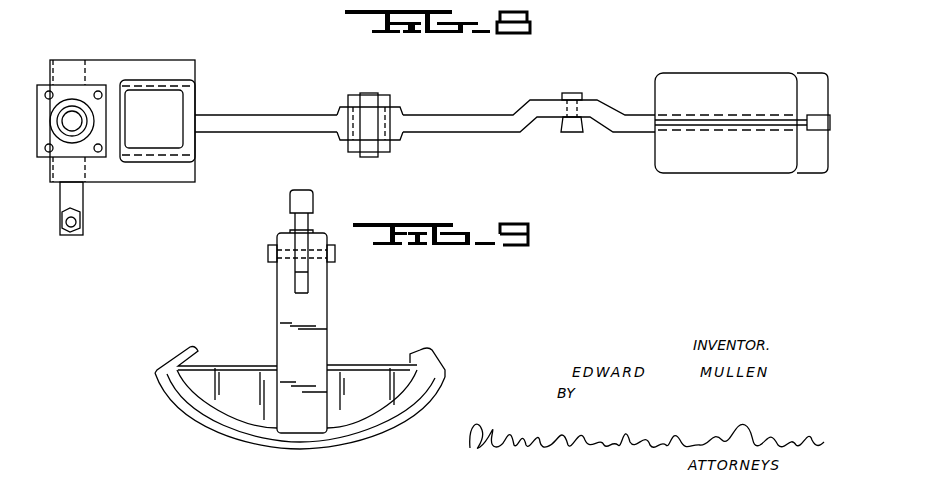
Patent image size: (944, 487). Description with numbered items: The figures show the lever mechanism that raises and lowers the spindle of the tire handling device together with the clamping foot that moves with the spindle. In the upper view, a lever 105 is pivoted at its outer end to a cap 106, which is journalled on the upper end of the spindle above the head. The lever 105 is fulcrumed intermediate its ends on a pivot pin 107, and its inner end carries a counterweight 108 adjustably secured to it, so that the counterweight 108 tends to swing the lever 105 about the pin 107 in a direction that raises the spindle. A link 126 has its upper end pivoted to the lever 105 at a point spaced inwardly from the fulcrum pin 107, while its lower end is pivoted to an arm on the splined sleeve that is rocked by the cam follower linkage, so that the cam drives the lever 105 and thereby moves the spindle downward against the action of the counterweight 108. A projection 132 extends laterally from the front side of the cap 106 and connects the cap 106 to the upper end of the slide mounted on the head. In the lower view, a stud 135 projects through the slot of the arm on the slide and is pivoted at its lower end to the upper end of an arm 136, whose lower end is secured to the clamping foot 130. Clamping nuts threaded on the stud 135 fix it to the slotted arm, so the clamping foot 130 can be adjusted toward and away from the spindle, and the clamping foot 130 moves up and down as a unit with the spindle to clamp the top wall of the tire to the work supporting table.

In FIG. 8, the lever 105 is at (290, 118).
In FIG. 8, the cap 106 is at (92, 150).
In FIG. 8, the pivot pin 107 is at (370, 110).
In FIG. 8, the counterweight 108 is at (777, 157).
In FIG. 8, the link 126 is at (572, 136).
In FIG. 8, the projection 132 is at (79, 223).
In FIG. 9, the stud 135 is at (310, 207).
In FIG. 9, the arm 136 is at (322, 352).
In FIG. 9, the clamping foot 130 is at (163, 397).